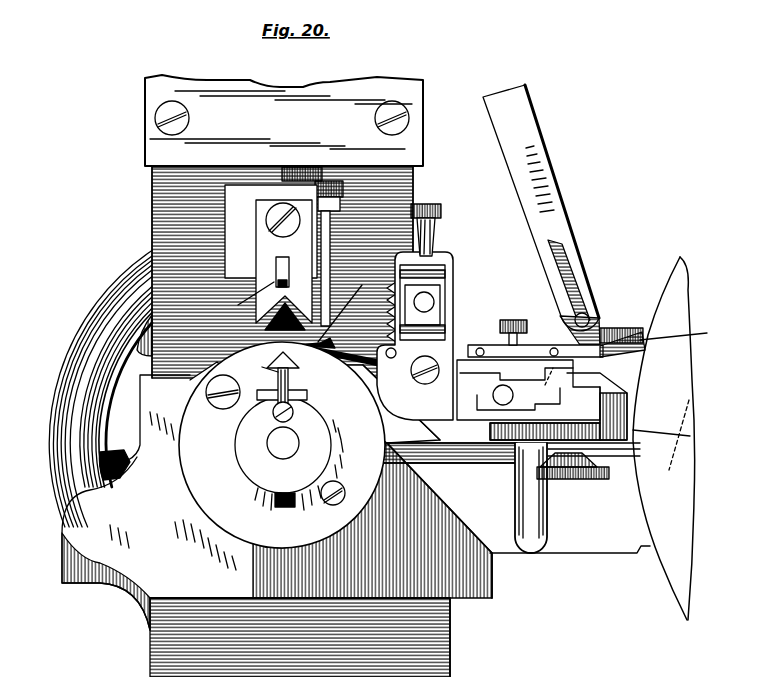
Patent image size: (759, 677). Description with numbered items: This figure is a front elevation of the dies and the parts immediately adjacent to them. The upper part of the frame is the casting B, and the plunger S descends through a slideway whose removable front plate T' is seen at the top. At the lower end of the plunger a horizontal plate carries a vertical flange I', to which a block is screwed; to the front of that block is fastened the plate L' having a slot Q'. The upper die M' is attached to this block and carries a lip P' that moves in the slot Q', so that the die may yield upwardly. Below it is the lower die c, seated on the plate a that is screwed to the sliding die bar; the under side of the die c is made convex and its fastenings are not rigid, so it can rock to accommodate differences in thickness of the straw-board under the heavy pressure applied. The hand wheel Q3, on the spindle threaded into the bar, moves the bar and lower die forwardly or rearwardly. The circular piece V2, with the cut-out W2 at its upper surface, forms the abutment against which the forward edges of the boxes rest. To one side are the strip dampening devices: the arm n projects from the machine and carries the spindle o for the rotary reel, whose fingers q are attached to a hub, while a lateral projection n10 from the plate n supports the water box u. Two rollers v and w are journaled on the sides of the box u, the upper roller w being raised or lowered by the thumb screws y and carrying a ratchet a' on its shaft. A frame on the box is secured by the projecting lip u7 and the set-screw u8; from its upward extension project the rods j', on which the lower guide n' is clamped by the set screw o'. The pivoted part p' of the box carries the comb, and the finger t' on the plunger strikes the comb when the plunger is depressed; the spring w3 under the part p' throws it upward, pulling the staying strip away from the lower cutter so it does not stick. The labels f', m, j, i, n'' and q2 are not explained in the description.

The hand wheel Q3 is at (62, 432).
The upper part of the frame B is at (277, 536).
The front plate T' is at (284, 120).
The plunger S is at (314, 166).
The finger t' is at (336, 268).
The vertical flange I' is at (271, 231).
The plate L' is at (284, 261).
The slot Q' is at (259, 272).
The upper die M' is at (283, 327).
The lip P' is at (244, 304).
The pivoted part of the box p' is at (335, 312).
The fingers q is at (378, 336).
The spring w3 is at (375, 404).
The tray or box u is at (415, 336).
The ratchet a' is at (442, 301).
The upper roller w is at (434, 300).
The spindle o is at (391, 353).
The roller v is at (428, 360).
The thumb screws y is at (442, 212).
The arm f' is at (541, 208).
The pivot lever m is at (569, 329).
The pin j is at (556, 339).
The rods j' is at (474, 340).
The set screw o' is at (517, 321).
The projecting lip u7 is at (528, 390).
The projection n10 is at (602, 380).
The set-screw u8 is at (493, 396).
The lower guide n' is at (541, 383).
The arm n is at (515, 498).
The nut n'' is at (581, 482).
The guide i is at (674, 344).
The curved plate q2 is at (664, 438).
The cut-out W2 is at (192, 385).
The circular piece of metal V2 is at (282, 445).
The plate a is at (278, 392).
The lower die c is at (262, 367).